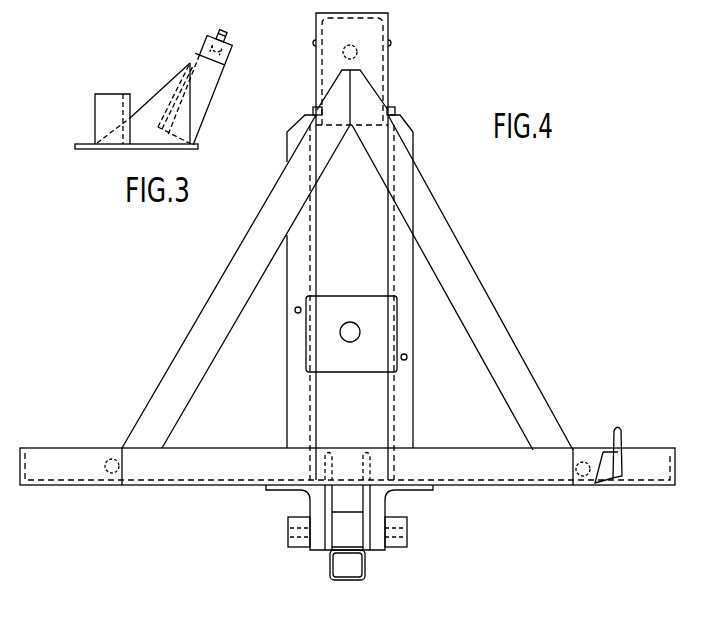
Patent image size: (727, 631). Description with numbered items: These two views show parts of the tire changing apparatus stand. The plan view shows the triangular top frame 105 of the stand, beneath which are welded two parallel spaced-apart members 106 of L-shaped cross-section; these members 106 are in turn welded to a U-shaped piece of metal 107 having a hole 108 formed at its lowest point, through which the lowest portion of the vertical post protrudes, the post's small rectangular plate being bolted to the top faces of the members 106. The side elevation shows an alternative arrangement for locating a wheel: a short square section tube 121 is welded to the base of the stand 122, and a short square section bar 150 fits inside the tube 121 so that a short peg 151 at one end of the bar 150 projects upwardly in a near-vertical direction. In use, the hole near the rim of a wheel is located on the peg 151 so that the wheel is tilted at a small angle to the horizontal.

In FIG. 4, the triangular top frame 105 is at (512, 372).
In FIG. 4, the parallel spaced-apart members 106 is at (305, 250).
In FIG. 4, the U-shaped piece of metal 107 is at (378, 312).
In FIG. 4, the hole 108 is at (340, 332).
In FIG. 3, the short square section tube 121 is at (205, 117).
In FIG. 3, the base of the stand 122 is at (92, 143).
In FIG. 3, the short square section bar 150 is at (200, 47).
In FIG. 3, the short peg 151 is at (213, 30).